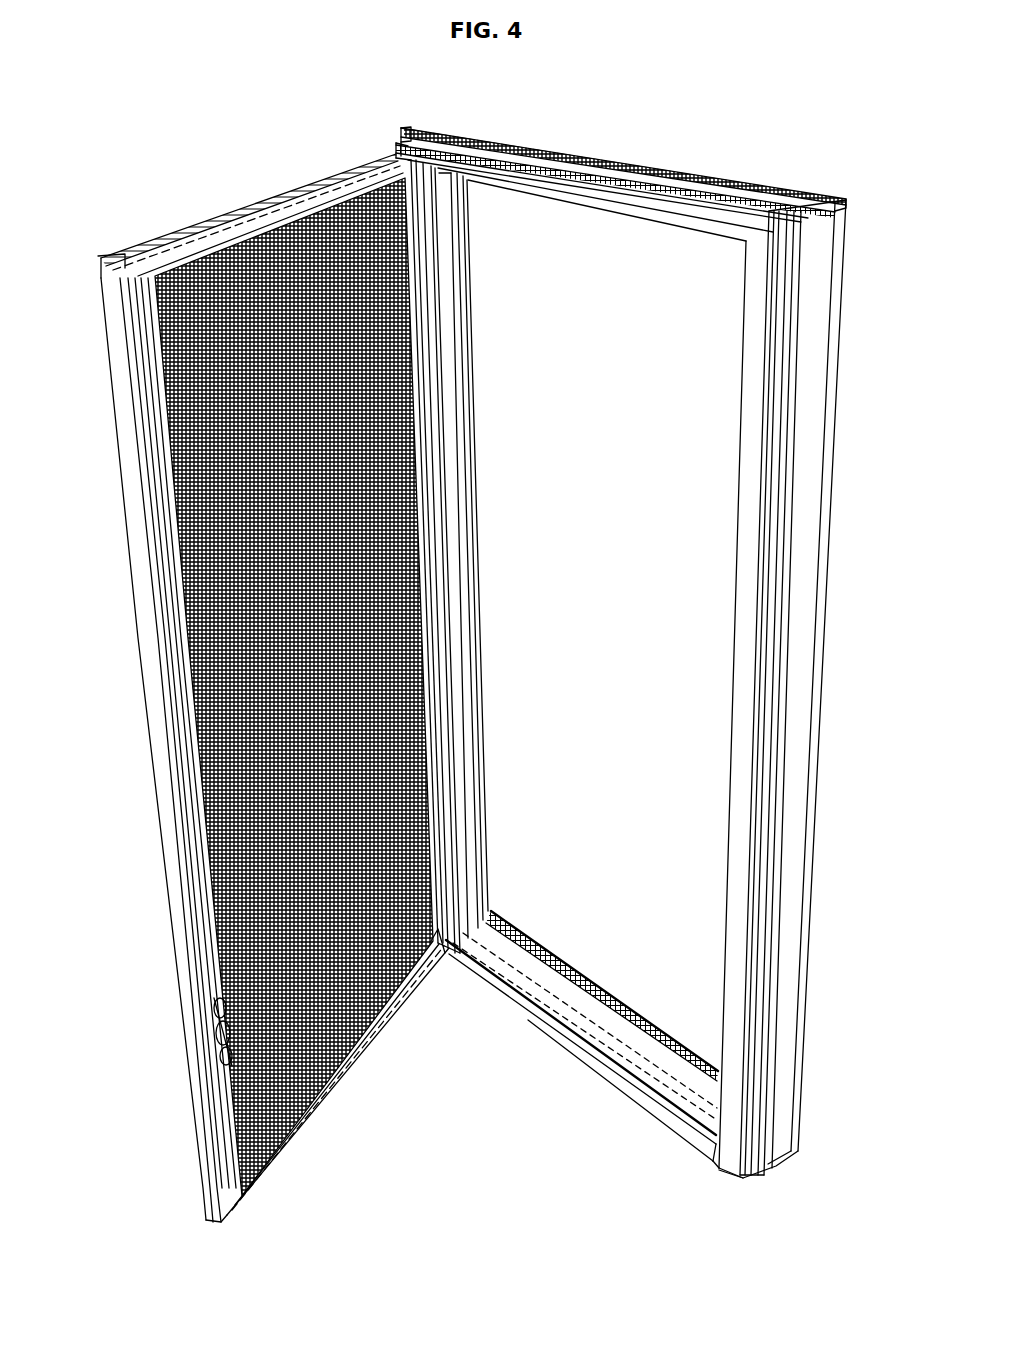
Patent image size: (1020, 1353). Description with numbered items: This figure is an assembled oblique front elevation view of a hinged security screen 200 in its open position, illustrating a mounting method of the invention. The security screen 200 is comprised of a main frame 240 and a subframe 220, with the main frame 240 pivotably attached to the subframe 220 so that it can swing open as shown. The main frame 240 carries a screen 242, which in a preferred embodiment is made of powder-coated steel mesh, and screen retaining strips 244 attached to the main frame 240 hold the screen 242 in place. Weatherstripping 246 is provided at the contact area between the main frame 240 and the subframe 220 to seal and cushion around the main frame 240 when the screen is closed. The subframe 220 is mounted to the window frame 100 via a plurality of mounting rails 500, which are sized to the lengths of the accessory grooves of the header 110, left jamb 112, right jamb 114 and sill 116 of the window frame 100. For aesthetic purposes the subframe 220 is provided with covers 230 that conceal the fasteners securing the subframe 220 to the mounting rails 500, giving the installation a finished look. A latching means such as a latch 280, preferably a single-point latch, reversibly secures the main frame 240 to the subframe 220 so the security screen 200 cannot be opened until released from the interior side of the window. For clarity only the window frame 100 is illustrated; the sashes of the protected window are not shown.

The window frame 100 is at (658, 650).
The header 110 is at (612, 150).
The left jamb 112 is at (470, 481).
The right jamb 114 is at (802, 654).
The sill 116 is at (590, 981).
The security screen 200 is at (266, 655).
The subframe 220 is at (525, 169).
The covers 230 is at (576, 169).
The main frame 240 is at (198, 1134).
The screen 242 is at (212, 614).
The screen retaining strips 244 is at (423, 921).
The weatherstripping 246 is at (283, 196).
The latch 280 is at (213, 1068).
The mounting rails 500 is at (773, 548).